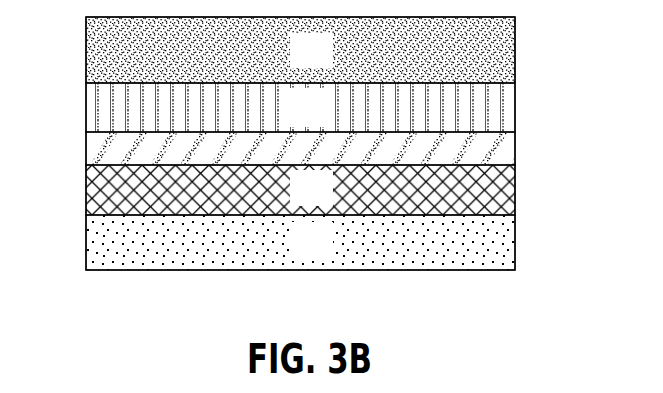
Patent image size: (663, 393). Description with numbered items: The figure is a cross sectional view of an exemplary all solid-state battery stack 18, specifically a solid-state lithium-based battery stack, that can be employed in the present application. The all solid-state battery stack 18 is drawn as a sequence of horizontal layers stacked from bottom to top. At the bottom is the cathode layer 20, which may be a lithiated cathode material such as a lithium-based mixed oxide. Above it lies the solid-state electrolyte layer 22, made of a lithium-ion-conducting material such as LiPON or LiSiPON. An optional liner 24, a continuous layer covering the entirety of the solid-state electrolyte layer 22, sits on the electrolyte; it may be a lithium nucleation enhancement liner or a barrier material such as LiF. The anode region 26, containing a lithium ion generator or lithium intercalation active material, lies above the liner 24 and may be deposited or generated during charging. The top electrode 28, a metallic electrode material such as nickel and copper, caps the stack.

The all solid-state battery stack 18 is at (80, 17).
The cathode layer 20 is at (326, 252).
The solid-state electrolyte layer 22 is at (326, 201).
The liner 24 is at (497, 150).
The anode region 26 is at (326, 121).
The top electrode 28 is at (326, 63).